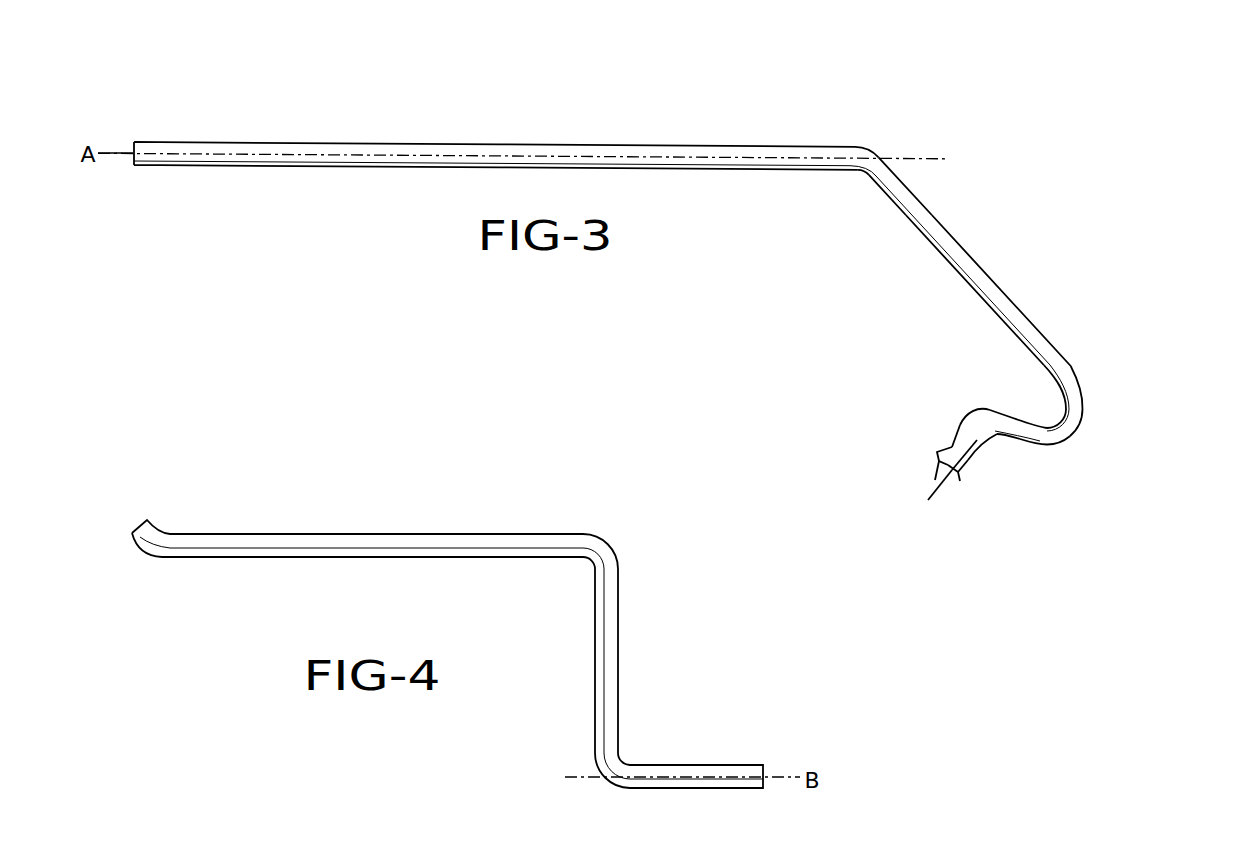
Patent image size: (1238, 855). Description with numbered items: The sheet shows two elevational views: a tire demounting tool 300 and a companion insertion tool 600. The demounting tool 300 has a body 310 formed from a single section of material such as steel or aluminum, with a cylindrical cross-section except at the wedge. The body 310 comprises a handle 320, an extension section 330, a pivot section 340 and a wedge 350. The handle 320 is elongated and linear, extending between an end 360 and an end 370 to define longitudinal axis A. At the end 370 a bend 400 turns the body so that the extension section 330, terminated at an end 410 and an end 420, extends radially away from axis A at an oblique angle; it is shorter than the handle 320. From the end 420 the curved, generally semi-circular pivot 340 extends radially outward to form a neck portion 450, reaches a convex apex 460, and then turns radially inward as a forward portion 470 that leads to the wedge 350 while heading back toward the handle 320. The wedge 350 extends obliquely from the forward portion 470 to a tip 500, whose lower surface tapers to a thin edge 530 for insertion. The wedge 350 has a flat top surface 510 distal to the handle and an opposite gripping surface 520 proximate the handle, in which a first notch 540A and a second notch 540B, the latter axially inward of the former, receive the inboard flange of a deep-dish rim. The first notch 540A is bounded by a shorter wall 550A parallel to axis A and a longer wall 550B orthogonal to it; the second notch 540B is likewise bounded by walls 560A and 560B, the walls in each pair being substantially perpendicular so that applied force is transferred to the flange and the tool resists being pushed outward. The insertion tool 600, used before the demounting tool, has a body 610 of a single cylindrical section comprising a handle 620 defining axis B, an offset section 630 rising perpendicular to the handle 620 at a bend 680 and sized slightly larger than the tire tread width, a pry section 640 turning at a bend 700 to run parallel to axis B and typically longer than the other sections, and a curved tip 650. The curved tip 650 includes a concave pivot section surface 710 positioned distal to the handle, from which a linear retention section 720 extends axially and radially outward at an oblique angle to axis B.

In FIG. 3, the tire demounting tool 300 is at (563, 124).
In FIG. 3, the body 310 is at (745, 145).
In FIG. 3, the handle 320 is at (267, 142).
In FIG. 3, the extension section 330 is at (946, 228).
In FIG. 3, the pivot section 340 is at (1074, 432).
In FIG. 3, the wedge 350 is at (975, 488).
In FIG. 3, the end of the handle 360 is at (133, 143).
In FIG. 3, the end of the handle 370 is at (857, 172).
In FIG. 3, the bend 400 is at (860, 147).
In FIG. 3, the end of the extension section 410 is at (884, 194).
In FIG. 3, the end of the extension section 420 is at (1074, 378).
In FIG. 3, the neck portion 450 is at (1083, 408).
In FIG. 3, the convex apex 460 is at (1061, 442).
In FIG. 3, the forward portion 470 is at (1020, 446).
In FIG. 3, the tip 500 is at (925, 478).
In FIG. 3, the flat top surface 510 is at (990, 470).
In FIG. 3, the gripping surface 520 is at (948, 442).
In FIG. 3, the thin edge 530 is at (922, 496).
In FIG. 3, the first notch 540A is at (920, 485).
In FIG. 3, the second notch 540B is at (925, 443).
In FIG. 3, the first wall 550A is at (934, 475).
In FIG. 3, the second wall 550B is at (952, 470).
In FIG. 3, the first wall 560A is at (935, 452).
In FIG. 3, the second wall 560B is at (962, 428).
In FIG. 4, the insertion tool 600 is at (403, 492).
In FIG. 4, the body 610 is at (515, 533).
In FIG. 4, the handle 620 is at (688, 765).
In FIG. 4, the offset section 630 is at (620, 680).
In FIG. 4, the pry section 640 is at (355, 547).
In FIG. 4, the curved tip 650 is at (136, 548).
In FIG. 4, the bend 680 is at (600, 778).
In FIG. 4, the bend 700 is at (612, 540).
In FIG. 4, the curved concave pivot section surface 710 is at (163, 534).
In FIG. 4, the retention section 720 is at (147, 518).